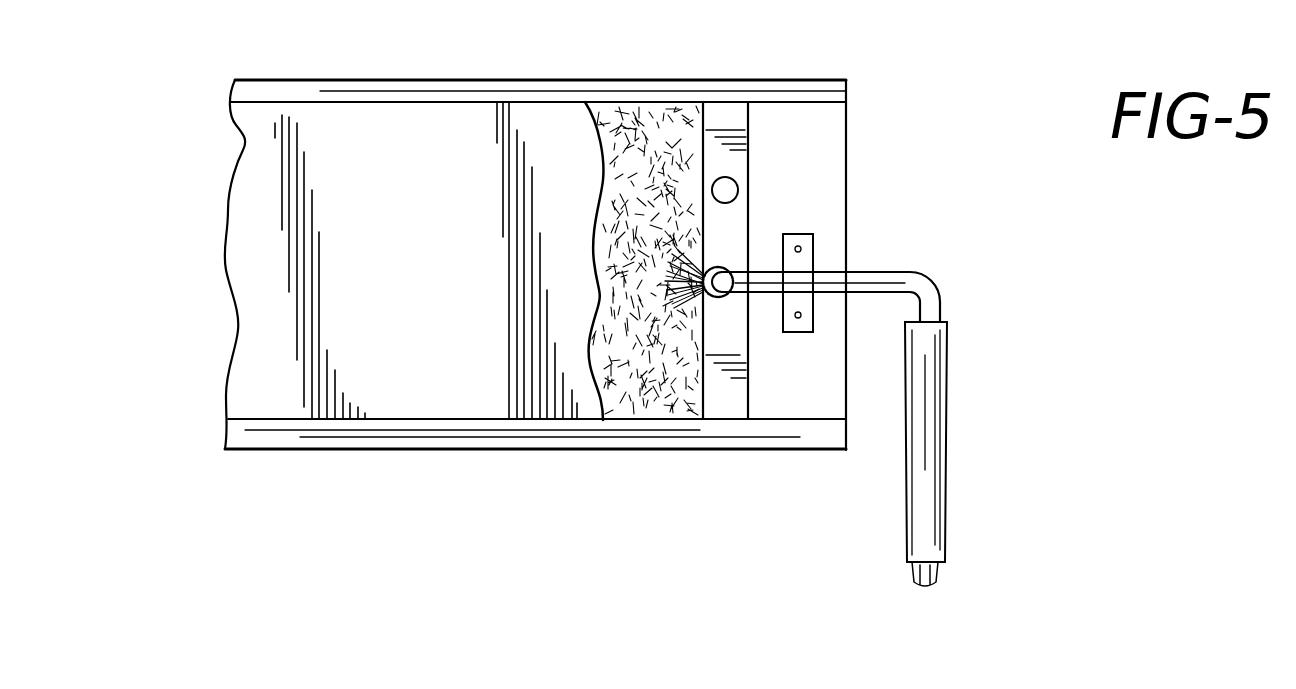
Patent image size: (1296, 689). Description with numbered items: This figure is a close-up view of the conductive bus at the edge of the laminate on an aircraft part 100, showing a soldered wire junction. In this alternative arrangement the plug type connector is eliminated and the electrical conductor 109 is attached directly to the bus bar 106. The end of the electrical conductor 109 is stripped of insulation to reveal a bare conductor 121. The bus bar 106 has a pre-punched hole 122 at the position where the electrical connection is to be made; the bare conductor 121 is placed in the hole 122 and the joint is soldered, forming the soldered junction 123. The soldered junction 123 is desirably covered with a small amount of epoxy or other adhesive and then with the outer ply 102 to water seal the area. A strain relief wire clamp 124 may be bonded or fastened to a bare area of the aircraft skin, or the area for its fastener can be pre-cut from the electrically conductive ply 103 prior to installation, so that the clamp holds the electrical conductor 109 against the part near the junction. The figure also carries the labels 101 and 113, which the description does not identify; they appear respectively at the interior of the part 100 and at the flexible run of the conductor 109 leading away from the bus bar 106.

The aircraft part 100 is at (438, 456).
The material flow direction / interior chamber 101 is at (268, 371).
The outer ply 102 is at (437, 152).
The electrically conductive ply 103 is at (632, 112).
The bus bar 106 is at (728, 112).
The electrical conductor 109 is at (885, 278).
The flexible hose 113 is at (930, 420).
The bare conductor 121 is at (677, 370).
The pre-punched hole 122 is at (738, 187).
The soldered junction 123 is at (723, 297).
The strain relief wire clamp 124 is at (800, 272).